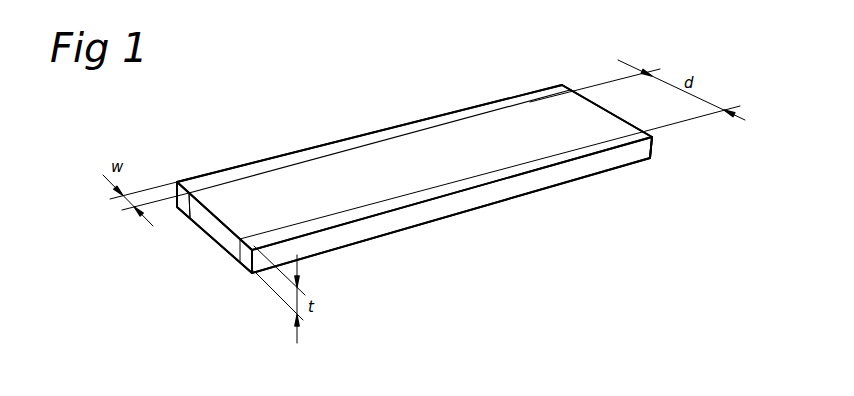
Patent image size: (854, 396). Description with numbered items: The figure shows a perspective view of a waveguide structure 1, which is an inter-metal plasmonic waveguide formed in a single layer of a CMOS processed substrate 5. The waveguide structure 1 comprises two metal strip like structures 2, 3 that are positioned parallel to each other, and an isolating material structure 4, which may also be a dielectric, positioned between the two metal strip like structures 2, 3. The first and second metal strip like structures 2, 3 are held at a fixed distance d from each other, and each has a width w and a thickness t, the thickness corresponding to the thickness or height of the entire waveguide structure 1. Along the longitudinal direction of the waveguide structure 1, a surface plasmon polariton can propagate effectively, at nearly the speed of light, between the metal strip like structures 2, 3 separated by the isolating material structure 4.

The waveguide structure 1 is at (342, 123).
The first metal strip like structure 2 is at (462, 115).
The second metal strip like structure 3 is at (588, 147).
The isolating material structure 4 is at (242, 212).
The CMOS processed substrate 5 is at (452, 253).